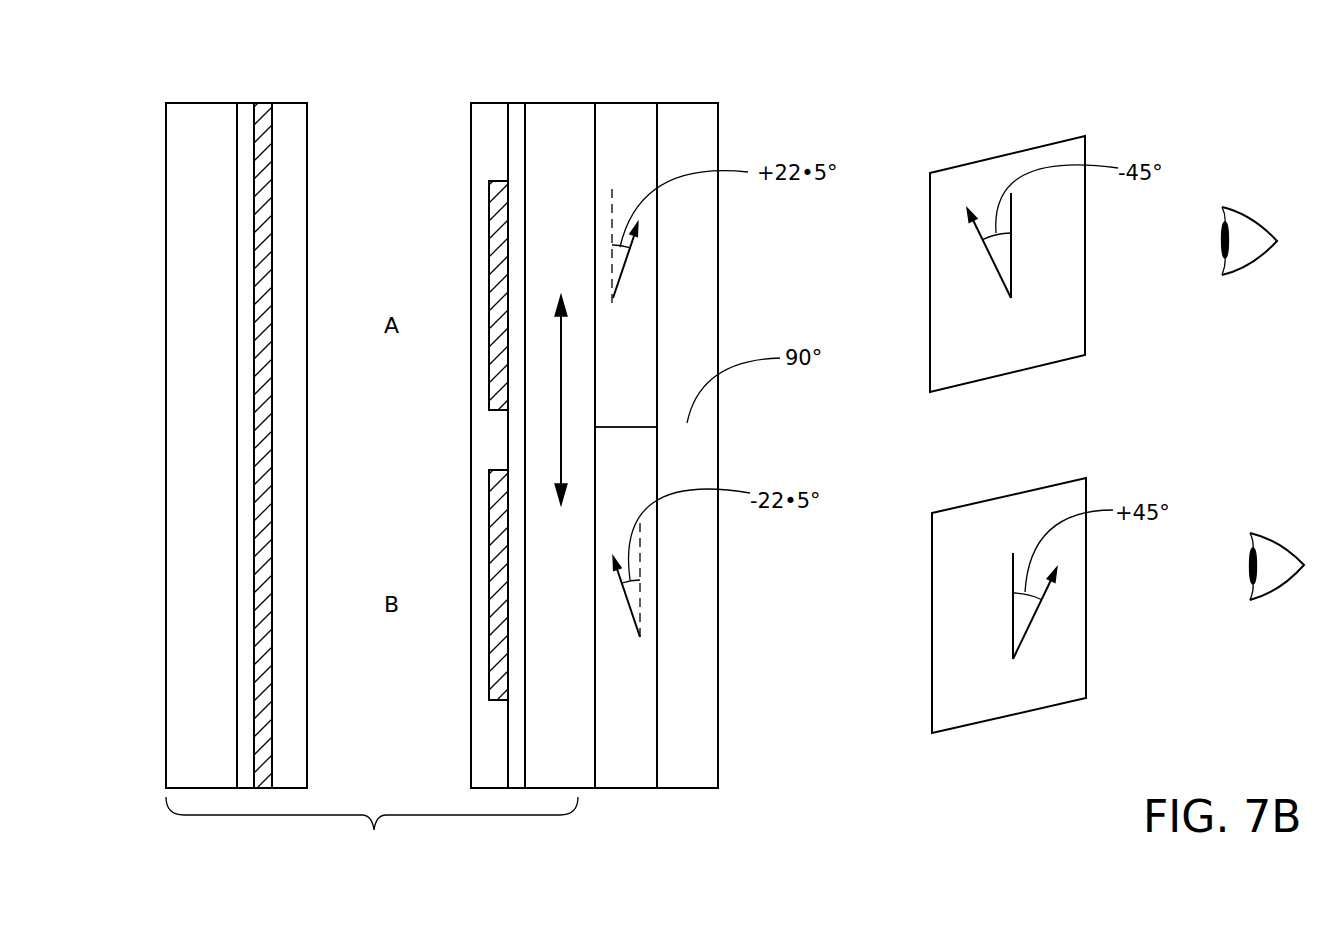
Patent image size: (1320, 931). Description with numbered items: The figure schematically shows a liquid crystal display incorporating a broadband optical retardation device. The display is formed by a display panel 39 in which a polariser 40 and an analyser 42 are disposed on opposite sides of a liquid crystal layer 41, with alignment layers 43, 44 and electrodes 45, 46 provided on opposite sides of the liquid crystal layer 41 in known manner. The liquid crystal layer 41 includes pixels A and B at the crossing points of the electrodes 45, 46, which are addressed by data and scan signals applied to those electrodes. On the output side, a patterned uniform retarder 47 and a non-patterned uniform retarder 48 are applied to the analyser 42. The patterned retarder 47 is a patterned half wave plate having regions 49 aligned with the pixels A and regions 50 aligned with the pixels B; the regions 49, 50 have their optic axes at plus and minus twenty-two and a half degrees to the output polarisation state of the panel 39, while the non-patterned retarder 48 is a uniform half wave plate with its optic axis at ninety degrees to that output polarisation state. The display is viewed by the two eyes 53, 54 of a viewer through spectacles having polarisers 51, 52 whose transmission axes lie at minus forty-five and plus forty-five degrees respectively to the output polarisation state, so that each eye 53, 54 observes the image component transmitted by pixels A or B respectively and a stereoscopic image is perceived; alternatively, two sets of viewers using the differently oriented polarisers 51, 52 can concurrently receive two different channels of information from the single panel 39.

The display panel 39 is at (372, 830).
The polariser 40 is at (187, 120).
The liquid crystal layer 41 is at (388, 133).
The analyser 42 is at (553, 102).
The alignment layer 43 is at (285, 135).
The alignment layer 44 is at (480, 148).
The electrode 45 is at (259, 115).
The electrode 46 is at (498, 188).
The patterned uniform retarder 47 is at (622, 769).
The non-patterned uniform retarder 48 is at (698, 770).
The region of patterned retarder 49 is at (625, 123).
The region of patterned retarder 50 is at (632, 698).
The polariser 51 is at (985, 165).
The polariser 52 is at (1007, 722).
The eye 53 is at (1255, 228).
The eye 54 is at (1275, 582).